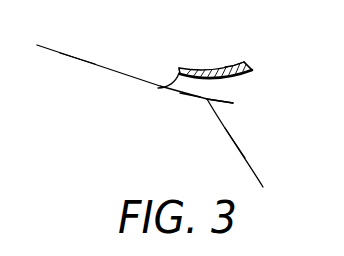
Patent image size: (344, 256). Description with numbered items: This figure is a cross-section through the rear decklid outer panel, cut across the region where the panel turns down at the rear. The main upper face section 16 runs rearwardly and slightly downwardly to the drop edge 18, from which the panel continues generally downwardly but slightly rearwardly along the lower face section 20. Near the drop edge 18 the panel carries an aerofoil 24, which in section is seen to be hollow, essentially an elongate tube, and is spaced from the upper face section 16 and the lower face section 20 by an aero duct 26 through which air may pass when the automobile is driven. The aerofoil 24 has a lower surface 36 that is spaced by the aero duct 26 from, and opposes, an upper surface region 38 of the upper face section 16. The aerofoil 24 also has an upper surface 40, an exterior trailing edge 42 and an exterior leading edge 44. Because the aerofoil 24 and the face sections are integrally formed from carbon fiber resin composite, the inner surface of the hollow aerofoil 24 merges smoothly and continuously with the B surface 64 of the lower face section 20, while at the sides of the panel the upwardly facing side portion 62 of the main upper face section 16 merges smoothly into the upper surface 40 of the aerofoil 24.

The main upper face section 16 is at (107, 67).
The drop edge 18 is at (233, 103).
The lower face section 20 is at (253, 163).
The aerofoil 24 is at (205, 68).
The aero duct 26 is at (228, 93).
The lower surface 36 is at (165, 90).
The upper surface region 38 is at (190, 97).
The upper surface 40 is at (237, 64).
The exterior trailing edge 42 is at (251, 67).
The exterior leading edge 44 is at (177, 71).
The left side portion 62 is at (77, 59).
The B surface 64 is at (237, 145).